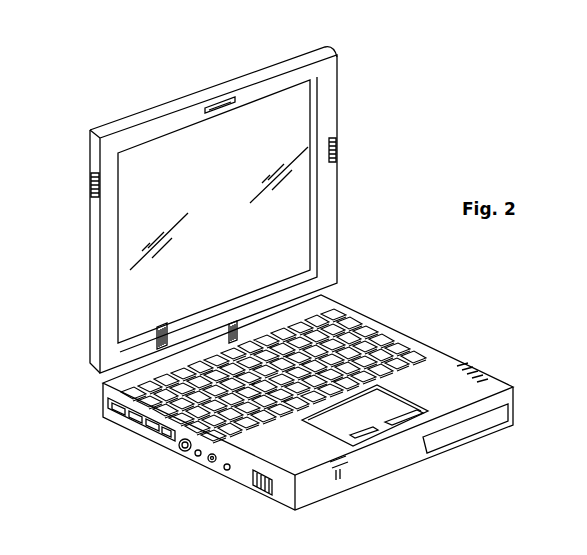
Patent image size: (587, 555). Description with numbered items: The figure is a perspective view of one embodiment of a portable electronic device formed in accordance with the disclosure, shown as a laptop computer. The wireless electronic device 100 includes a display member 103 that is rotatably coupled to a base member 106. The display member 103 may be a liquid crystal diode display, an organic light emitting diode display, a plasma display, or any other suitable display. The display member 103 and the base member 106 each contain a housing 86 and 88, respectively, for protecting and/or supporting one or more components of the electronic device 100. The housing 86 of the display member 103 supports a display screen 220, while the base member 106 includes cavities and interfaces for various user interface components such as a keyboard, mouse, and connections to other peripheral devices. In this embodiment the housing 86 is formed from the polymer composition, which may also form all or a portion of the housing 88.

The wireless electronic device 100 is at (380, 55).
The display member 103 is at (85, 259).
The housing 86 is at (345, 164).
The display screen 220 is at (243, 236).
The housing 88 is at (440, 345).
The base member 106 is at (183, 471).